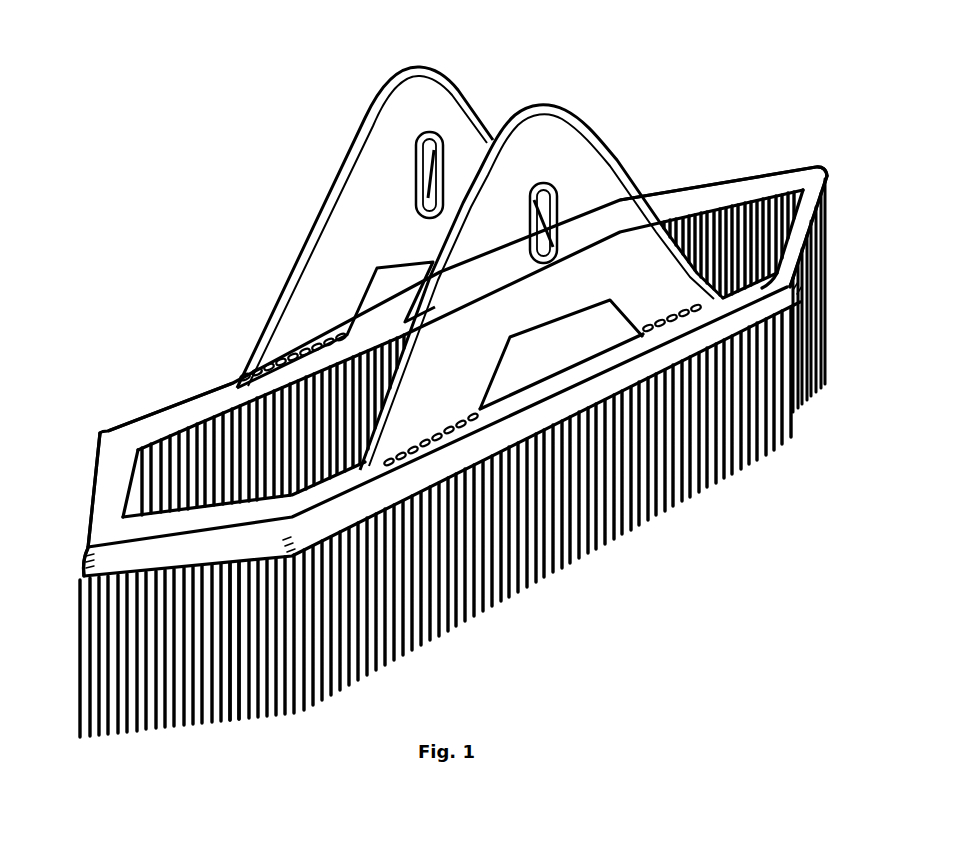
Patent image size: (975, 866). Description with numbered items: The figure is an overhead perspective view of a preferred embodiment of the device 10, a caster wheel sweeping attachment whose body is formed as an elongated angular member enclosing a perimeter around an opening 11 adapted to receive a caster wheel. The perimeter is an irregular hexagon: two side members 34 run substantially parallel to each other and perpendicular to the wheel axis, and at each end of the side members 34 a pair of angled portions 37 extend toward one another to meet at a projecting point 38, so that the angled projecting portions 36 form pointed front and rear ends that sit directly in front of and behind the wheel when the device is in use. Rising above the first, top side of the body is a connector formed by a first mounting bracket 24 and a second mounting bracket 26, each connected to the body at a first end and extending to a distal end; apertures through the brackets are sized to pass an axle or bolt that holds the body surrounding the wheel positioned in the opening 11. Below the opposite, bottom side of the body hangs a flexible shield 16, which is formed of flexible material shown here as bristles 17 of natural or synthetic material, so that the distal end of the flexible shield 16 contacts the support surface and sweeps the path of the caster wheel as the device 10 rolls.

The device 10 is at (200, 238).
The opening 11 is at (252, 403).
The flexible shield 16 is at (213, 710).
The bristles 17 is at (233, 728).
The first mounting bracket 24 is at (553, 115).
The second mounting bracket 26 is at (462, 100).
The side members 34 is at (235, 386).
The angled projecting portions 36 is at (93, 455).
The angled portions 37 is at (105, 482).
The projecting point 38 is at (80, 530).